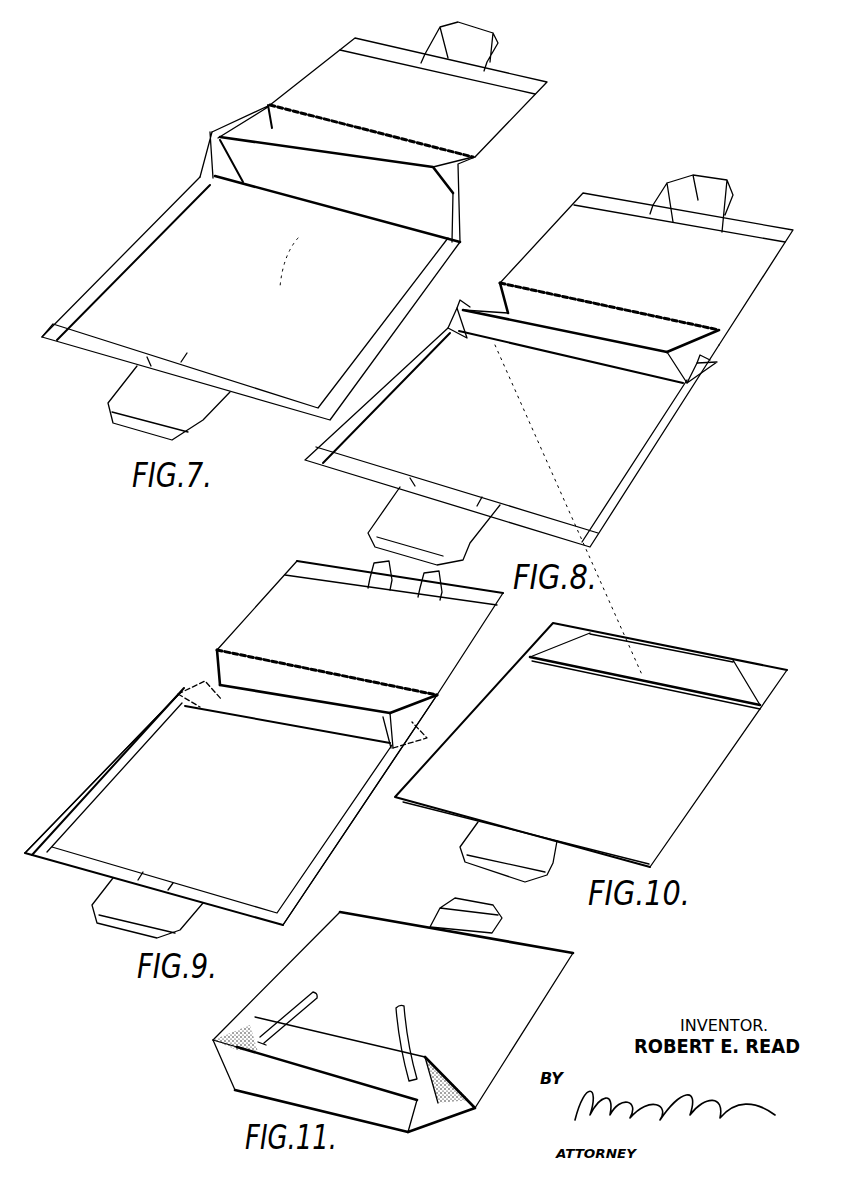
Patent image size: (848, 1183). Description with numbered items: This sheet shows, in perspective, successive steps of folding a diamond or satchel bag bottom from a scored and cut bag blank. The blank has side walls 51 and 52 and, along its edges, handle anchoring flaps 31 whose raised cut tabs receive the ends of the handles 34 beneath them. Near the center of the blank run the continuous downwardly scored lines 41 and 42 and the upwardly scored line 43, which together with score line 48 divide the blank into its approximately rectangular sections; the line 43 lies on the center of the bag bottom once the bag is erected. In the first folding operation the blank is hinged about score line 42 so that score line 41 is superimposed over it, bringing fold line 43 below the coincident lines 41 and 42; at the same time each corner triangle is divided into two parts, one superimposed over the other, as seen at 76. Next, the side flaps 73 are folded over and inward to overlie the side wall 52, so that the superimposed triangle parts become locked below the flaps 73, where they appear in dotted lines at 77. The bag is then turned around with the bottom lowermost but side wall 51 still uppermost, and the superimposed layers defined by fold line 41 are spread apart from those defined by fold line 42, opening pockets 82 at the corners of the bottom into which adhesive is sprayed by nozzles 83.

In FIG. 7, the edge or handle anchoring flaps 31 is at (392, 53).
In FIG. 8, the edge or handle anchoring flaps 31 is at (627, 210).
In FIG. 9, the edge or handle anchoring flaps 31 is at (328, 573).
In FIG. 7, the handles 34 is at (505, 36).
In FIG. 8, the handles 34 is at (737, 176).
In FIG. 9, the handles 34 is at (92, 921).
In FIG. 10, the handles 34 is at (453, 851).
In FIG. 11, the handles 34 is at (508, 927).
In FIG. 7, the downwardly scored line 41 is at (414, 167).
In FIG. 8, the downwardly scored line 41 is at (640, 344).
In FIG. 9, the downwardly scored line 41 is at (317, 704).
In FIG. 10, the downwardly scored line 41 is at (682, 650).
In FIG. 11, the downwardly scored line 41 is at (340, 1034).
In FIG. 7, the downwardly scored line 42 is at (345, 215).
In FIG. 8, the downwardly scored line 42 is at (460, 307).
In FIG. 11, the downwardly scored line 42 is at (363, 1122).
In FIG. 7, the upwardly scored line 43 is at (376, 174).
In FIG. 8, the upwardly scored line 43 is at (617, 367).
In FIG. 9, the upwardly scored line 43 is at (311, 728).
In FIG. 11, the upwardly scored line 43 is at (350, 1082).
In FIG. 7, the score line 48 is at (428, 138).
In FIG. 8, the score line 48 is at (660, 313).
In FIG. 9, the score line 48 is at (370, 683).
In FIG. 10, the score line 48 is at (676, 690).
In FIG. 7, the side wall 51 is at (408, 97).
In FIG. 8, the side wall 51 is at (646, 269).
In FIG. 9, the side wall 51 is at (360, 628).
In FIG. 10, the side wall 51 is at (591, 745).
In FIG. 11, the side wall 51 is at (393, 1010).
In FIG. 7, the side wall 52 is at (251, 298).
In FIG. 8, the side wall 52 is at (512, 502).
In FIG. 9, the side wall 52 is at (231, 809).
In FIG. 9, the flaps 73 is at (148, 737).
In FIG. 8, the superimposed triangle parts 76 is at (453, 326).
In FIG. 9, the locked-in parts 77 is at (178, 692).
In FIG. 11, the pockets 82 is at (242, 1033).
In FIG. 11, the nozzles 83 is at (267, 1045).